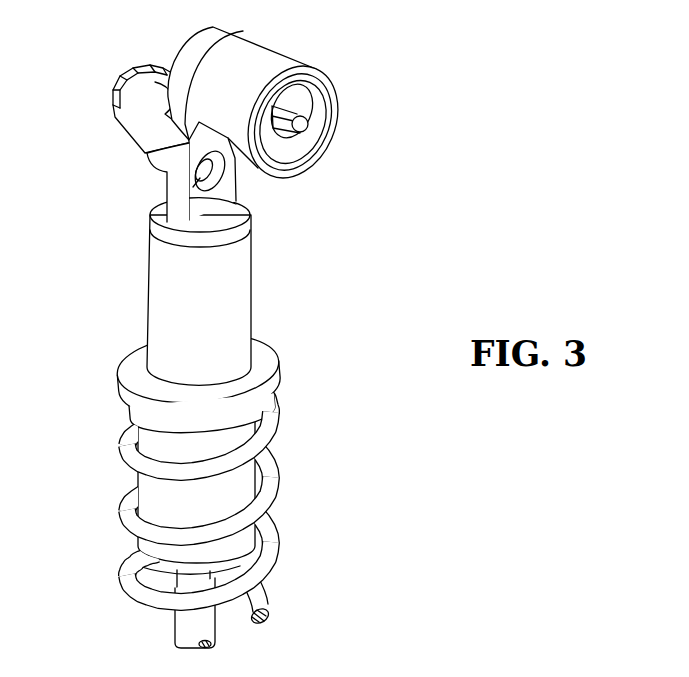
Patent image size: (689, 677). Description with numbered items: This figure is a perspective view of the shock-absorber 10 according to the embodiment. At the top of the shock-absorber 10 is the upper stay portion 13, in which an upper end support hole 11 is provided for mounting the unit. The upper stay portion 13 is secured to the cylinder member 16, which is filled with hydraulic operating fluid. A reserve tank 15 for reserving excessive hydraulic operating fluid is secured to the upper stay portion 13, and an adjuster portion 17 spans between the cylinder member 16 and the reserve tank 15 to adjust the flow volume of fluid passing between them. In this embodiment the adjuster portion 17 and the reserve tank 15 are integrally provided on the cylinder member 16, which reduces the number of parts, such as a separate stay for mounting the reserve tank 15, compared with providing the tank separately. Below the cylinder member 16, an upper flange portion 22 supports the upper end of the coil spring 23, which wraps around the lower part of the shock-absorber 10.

The shock-absorber 10 is at (393, 207).
The upper end support hole 11 is at (157, 176).
The upper stay portion 13 is at (147, 154).
The reserve tank 15 is at (262, 62).
The cylinder member 16 is at (228, 277).
The adjuster portion 17 is at (133, 112).
The upper flange portion 22 is at (278, 375).
The spring 23 is at (272, 430).